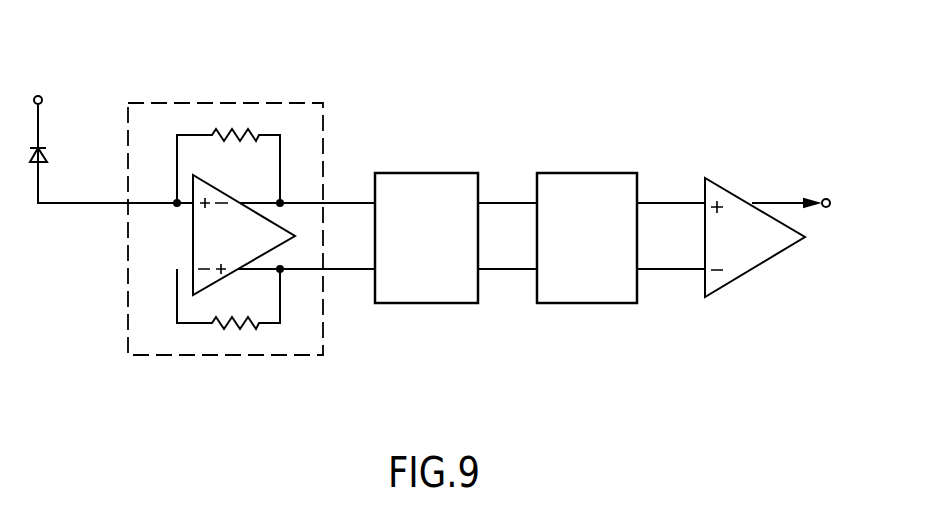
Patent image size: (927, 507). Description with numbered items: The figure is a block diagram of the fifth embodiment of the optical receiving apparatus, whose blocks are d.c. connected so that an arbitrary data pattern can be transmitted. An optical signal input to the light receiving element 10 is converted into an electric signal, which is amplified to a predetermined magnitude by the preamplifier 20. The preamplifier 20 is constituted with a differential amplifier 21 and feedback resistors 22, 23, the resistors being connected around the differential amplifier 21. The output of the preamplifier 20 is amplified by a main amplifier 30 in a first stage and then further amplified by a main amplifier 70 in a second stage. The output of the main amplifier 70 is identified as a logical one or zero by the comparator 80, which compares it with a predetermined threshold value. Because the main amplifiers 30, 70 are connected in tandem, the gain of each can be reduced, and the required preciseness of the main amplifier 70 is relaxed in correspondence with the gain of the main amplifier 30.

The light receiving element 10 is at (34, 165).
The preamplifier 20 is at (190, 103).
The differential amplifier 21 is at (193, 232).
The feedback resistor 22 is at (251, 133).
The feedback resistor 23 is at (246, 326).
The main amplifier 30 is at (430, 173).
The main amplifier 70 is at (582, 173).
The comparator 80 is at (737, 197).